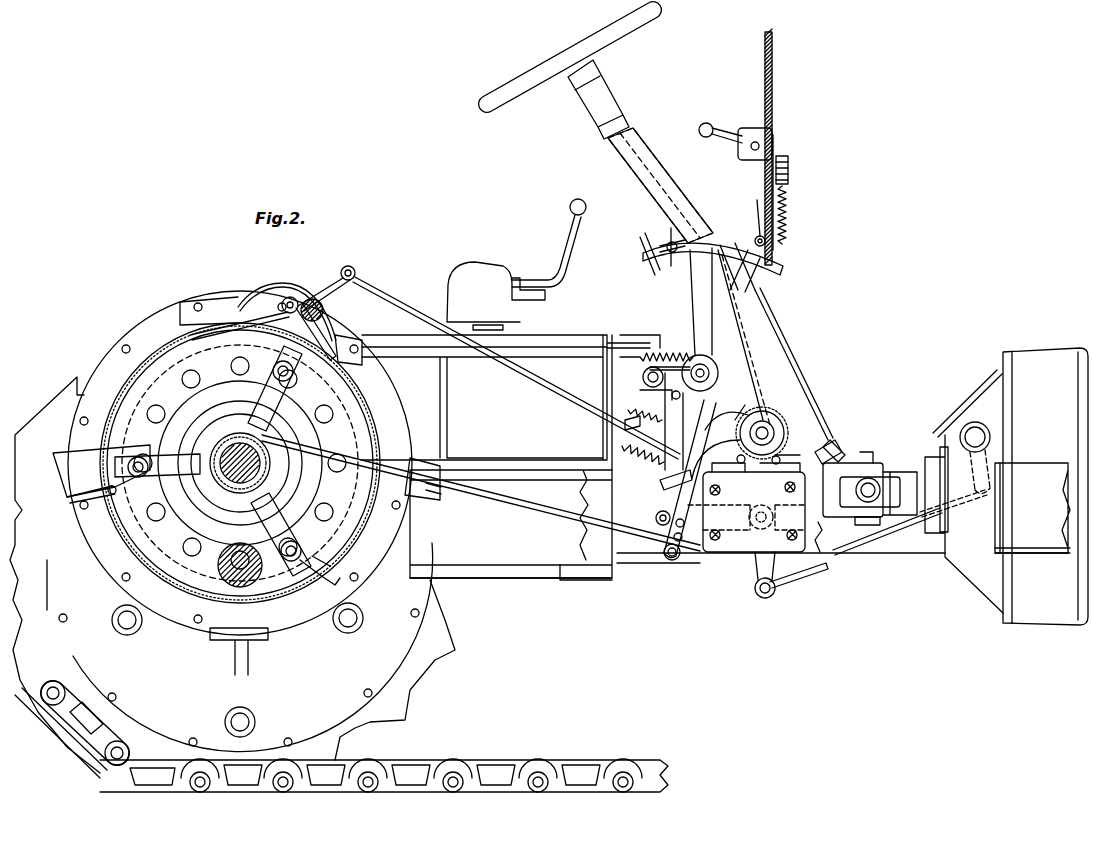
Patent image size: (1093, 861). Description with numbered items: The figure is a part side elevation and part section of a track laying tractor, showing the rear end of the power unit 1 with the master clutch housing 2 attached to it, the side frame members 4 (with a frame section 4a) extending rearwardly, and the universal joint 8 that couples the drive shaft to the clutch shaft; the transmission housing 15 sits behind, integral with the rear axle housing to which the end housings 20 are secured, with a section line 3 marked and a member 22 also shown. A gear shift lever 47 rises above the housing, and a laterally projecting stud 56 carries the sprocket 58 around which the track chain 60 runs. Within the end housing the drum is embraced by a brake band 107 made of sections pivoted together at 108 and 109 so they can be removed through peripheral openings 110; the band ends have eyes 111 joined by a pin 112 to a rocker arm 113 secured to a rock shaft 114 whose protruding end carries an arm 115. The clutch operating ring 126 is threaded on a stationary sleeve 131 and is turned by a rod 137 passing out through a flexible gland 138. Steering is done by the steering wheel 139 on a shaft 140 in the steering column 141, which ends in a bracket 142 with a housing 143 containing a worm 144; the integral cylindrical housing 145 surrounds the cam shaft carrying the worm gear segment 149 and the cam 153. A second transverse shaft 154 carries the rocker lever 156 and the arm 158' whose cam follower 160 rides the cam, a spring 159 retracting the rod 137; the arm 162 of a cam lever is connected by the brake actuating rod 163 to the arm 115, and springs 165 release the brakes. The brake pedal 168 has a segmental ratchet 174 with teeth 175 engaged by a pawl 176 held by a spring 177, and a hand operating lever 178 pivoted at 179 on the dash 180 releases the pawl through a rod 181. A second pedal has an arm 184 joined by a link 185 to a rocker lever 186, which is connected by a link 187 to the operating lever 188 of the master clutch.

The power unit 1 is at (1068, 352).
The master clutch housing 2 is at (985, 403).
The section line 3- 3 is at (645, 697).
The side frame members 4 is at (547, 570).
The frame section 4a is at (745, 432).
The universal joint 8 is at (878, 470).
The transmission housing 15 is at (506, 402).
The end housings 20 is at (170, 352).
The tank 22 is at (455, 470).
The gear shift lever 47 is at (556, 243).
The laterally projecting studs 56 is at (240, 590).
The sprocket 58 is at (400, 712).
The track chain 60 is at (42, 688).
The brake band 107 is at (348, 343).
The pivot of brake band sections 108 is at (100, 513).
The pivot of brake band sections 109 is at (313, 572).
The peripheral openings 110 is at (68, 463).
The eyes 111 is at (268, 306).
The pin 112 is at (298, 298).
The rocker arm 113 is at (305, 295).
The rock shaft 114 is at (338, 303).
The arm 115 is at (356, 279).
The ring 126 is at (205, 430).
The stationary sleeve 131 is at (244, 424).
The rod 137 is at (505, 500).
The flexible gland 138 is at (432, 488).
The steering wheel 139 is at (541, 72).
The shaft 140 is at (630, 130).
The steering column 141 is at (596, 90).
The bracket 142 is at (720, 365).
The housing 143 is at (778, 362).
The worm 144 is at (780, 420).
The cylindrical housing 145 is at (844, 444).
The worm gear segment 149 is at (838, 378).
The cam 153 is at (790, 466).
The second transverse shaft 154 is at (739, 475).
The rocker lever 156 is at (652, 405).
The arm 158' is at (746, 529).
The spring 159 is at (665, 490).
The cam follower 160 is at (782, 405).
The arm 162 is at (655, 470).
The brake actuating rod 163 is at (556, 394).
The springs 165 is at (628, 446).
The brake pedal 168 is at (652, 266).
The segmental ratchet 174 is at (705, 240).
The teeth 175 is at (740, 252).
The pawl 176 is at (767, 244).
The spring 177 is at (790, 190).
The hand operating lever 178 is at (726, 128).
The pivot 179 is at (773, 141).
The dash 180 is at (774, 72).
The rod 181 is at (789, 166).
The arm 184 is at (643, 377).
The link 185 is at (656, 518).
The rocker lever 186 is at (762, 570).
The link 187 is at (828, 573).
The operating lever 188 is at (990, 455).